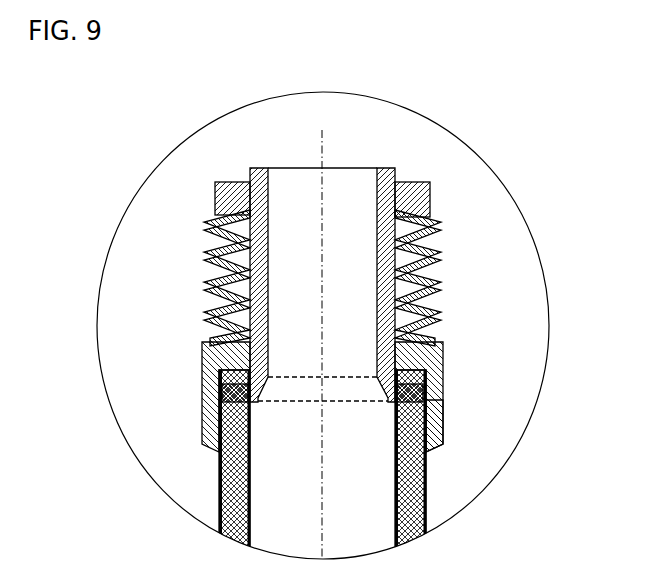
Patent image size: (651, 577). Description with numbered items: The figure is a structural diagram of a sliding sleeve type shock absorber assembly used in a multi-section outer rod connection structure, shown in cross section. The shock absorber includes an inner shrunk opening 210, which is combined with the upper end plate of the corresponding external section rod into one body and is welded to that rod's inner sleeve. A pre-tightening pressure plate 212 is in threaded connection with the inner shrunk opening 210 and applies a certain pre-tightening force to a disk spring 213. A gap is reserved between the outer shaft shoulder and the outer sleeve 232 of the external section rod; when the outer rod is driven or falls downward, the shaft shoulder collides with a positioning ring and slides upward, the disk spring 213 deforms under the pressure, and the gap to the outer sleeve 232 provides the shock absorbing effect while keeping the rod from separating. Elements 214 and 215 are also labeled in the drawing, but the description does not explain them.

The inner shrunk opening 210 is at (262, 202).
The pre-tightening pressure plate 212 is at (408, 195).
The disk spring 213 is at (440, 245).
The sleeve 214 is at (438, 342).
The collar 215 is at (444, 428).
The outer sleeve 232 is at (220, 488).